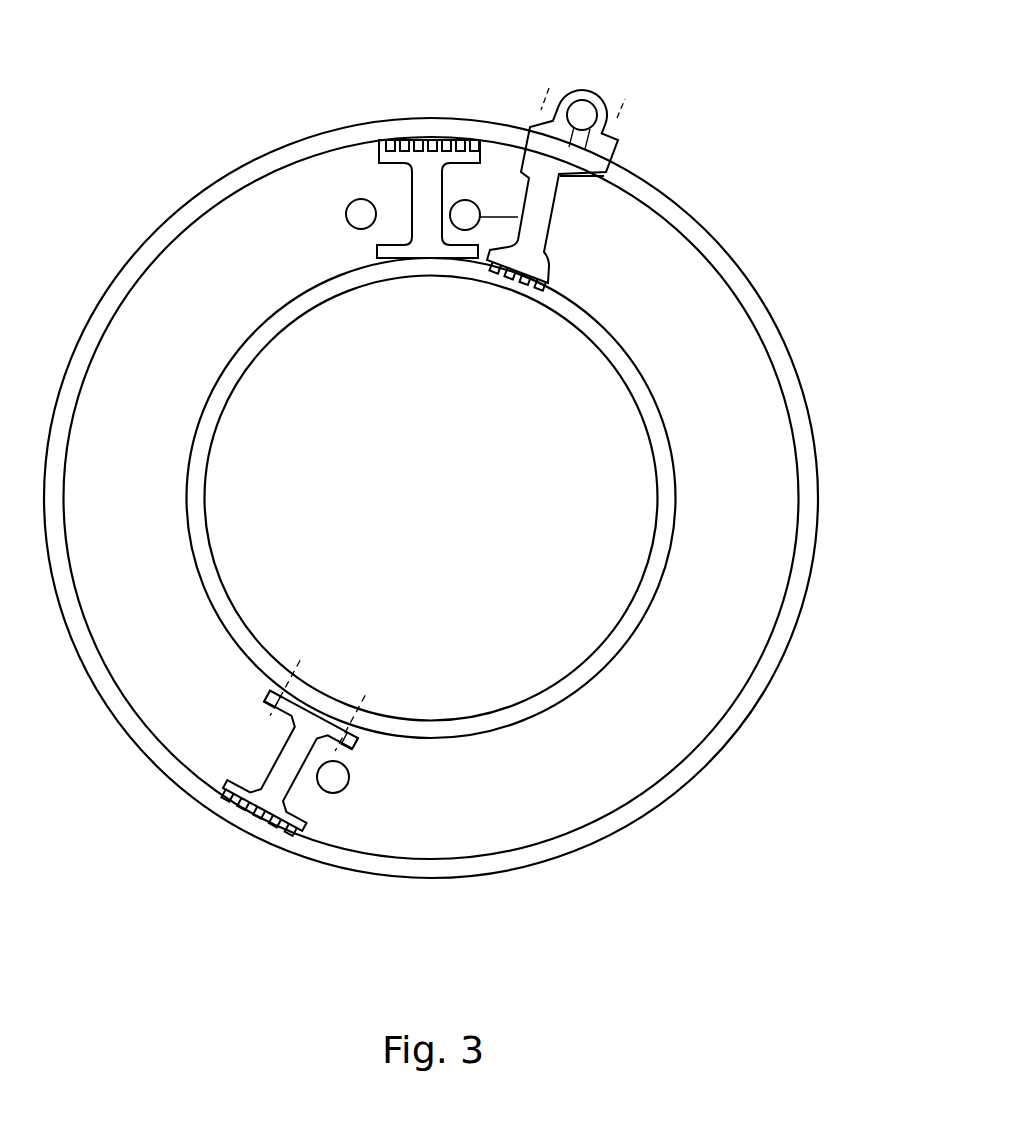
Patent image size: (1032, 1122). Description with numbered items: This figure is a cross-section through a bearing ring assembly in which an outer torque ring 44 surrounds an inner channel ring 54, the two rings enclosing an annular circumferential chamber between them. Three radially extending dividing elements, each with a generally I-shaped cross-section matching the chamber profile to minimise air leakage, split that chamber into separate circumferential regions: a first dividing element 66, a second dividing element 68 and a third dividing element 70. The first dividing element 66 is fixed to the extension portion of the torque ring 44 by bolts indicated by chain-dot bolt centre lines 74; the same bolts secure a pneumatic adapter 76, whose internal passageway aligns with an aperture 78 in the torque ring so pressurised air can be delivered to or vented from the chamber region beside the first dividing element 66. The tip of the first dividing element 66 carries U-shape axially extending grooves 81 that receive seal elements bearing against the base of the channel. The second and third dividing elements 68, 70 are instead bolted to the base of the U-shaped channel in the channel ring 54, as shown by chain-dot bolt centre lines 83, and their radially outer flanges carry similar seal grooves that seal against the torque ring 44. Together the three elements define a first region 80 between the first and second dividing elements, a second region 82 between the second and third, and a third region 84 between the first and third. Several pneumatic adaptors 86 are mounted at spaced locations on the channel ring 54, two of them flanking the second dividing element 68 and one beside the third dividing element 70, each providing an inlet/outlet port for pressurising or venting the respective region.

The torque ring 44 is at (810, 508).
The channel ring 54 is at (657, 487).
The first dividing element 66 is at (612, 186).
The second dividing element 68 is at (460, 183).
The third dividing element 70 is at (268, 771).
The bolt centre lines 74 is at (545, 107).
The pneumatic adapter 76 is at (600, 90).
The aperture 78 is at (577, 197).
The first region 80 is at (499, 197).
The U-shape axially extending grooves 81 is at (512, 284).
The second region 82 is at (161, 427).
The bolt centre lines 83 is at (307, 678).
The third region 84 is at (701, 692).
The pneumatic adaptors 86 is at (361, 229).